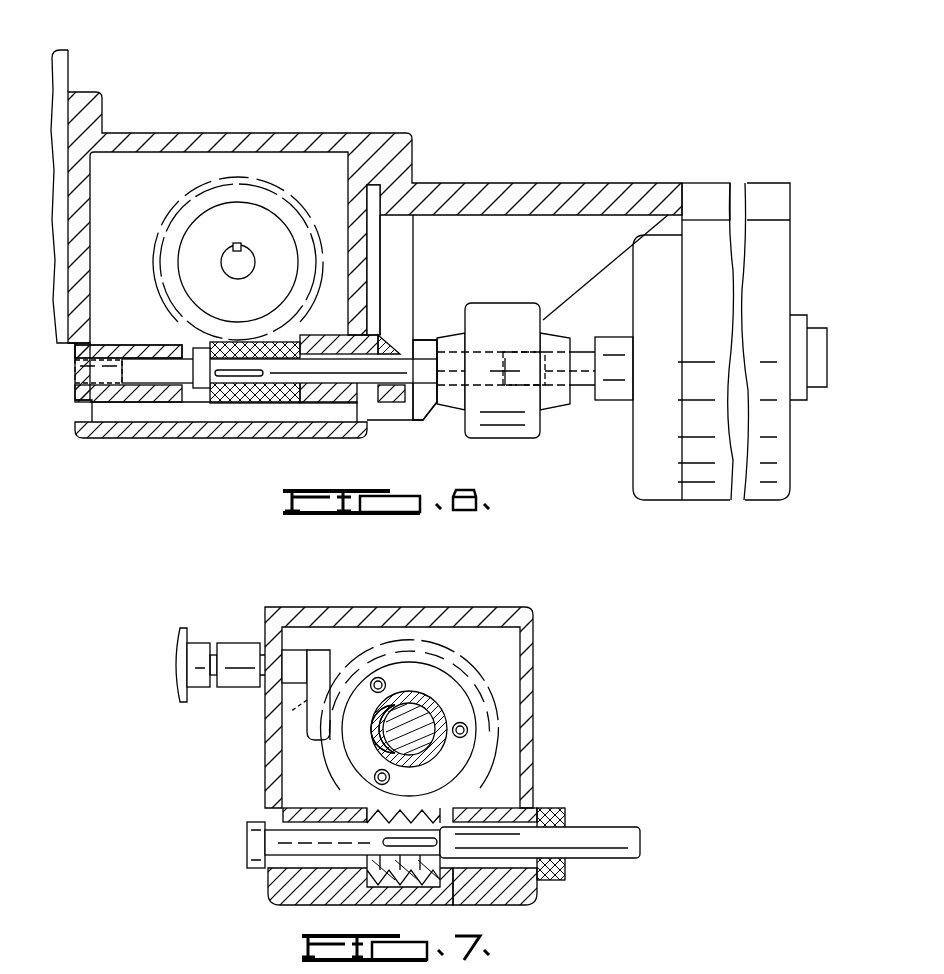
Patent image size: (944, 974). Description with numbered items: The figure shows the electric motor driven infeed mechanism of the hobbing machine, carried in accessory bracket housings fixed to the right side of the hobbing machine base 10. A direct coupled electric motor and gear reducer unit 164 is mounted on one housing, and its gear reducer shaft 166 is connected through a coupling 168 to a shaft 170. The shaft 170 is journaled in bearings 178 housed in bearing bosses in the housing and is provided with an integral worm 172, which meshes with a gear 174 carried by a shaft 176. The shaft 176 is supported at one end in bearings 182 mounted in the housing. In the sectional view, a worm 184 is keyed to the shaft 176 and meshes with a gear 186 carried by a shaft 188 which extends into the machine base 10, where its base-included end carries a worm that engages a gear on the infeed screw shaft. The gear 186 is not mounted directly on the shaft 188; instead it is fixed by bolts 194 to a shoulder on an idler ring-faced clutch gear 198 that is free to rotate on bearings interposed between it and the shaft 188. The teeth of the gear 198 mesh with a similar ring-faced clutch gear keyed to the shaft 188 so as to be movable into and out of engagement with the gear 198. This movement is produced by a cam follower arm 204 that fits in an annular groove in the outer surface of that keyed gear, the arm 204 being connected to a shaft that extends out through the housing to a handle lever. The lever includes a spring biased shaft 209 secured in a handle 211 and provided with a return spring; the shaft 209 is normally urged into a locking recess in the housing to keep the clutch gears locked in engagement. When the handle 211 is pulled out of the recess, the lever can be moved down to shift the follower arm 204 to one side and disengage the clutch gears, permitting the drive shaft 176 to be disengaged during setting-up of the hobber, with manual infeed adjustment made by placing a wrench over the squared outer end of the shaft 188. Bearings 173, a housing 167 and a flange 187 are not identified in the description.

In FIG. 6, the hobbing machine base 10 is at (74, 66).
In FIG. 6, the direct coupled electric motor and gear reducer unit 164 is at (730, 341).
In FIG. 6, the gear reducer shaft 166 is at (575, 386).
In FIG. 7, the housing 167 is at (534, 703).
In FIG. 6, the coupling 168 is at (525, 334).
In FIG. 6, the shaft 170 is at (428, 342).
In FIG. 6, the worm 172 is at (232, 402).
In FIG. 6, the bushing 173 is at (155, 326).
In FIG. 6, the gear 174 is at (296, 198).
In FIG. 6, the shaft 176 is at (232, 270).
In FIG. 7, the shaft 176 is at (598, 831).
In FIG. 6, the bearings 178 is at (312, 342).
In FIG. 7, the bearings 182 is at (284, 812).
In FIG. 7, the worm 184 is at (425, 905).
In FIG. 7, the gear 186 is at (462, 664).
In FIG. 7, the flange 187 is at (538, 810).
In FIG. 7, the shaft 188 is at (388, 730).
In FIG. 7, the bolts 194 is at (460, 738).
In FIG. 7, the idler ring-faced clutch gear 198 is at (437, 712).
In FIG. 7, the cam follower arm 204 is at (284, 714).
In FIG. 7, the spring biased shaft 209 is at (219, 644).
In FIG. 7, the handle 211 is at (172, 650).